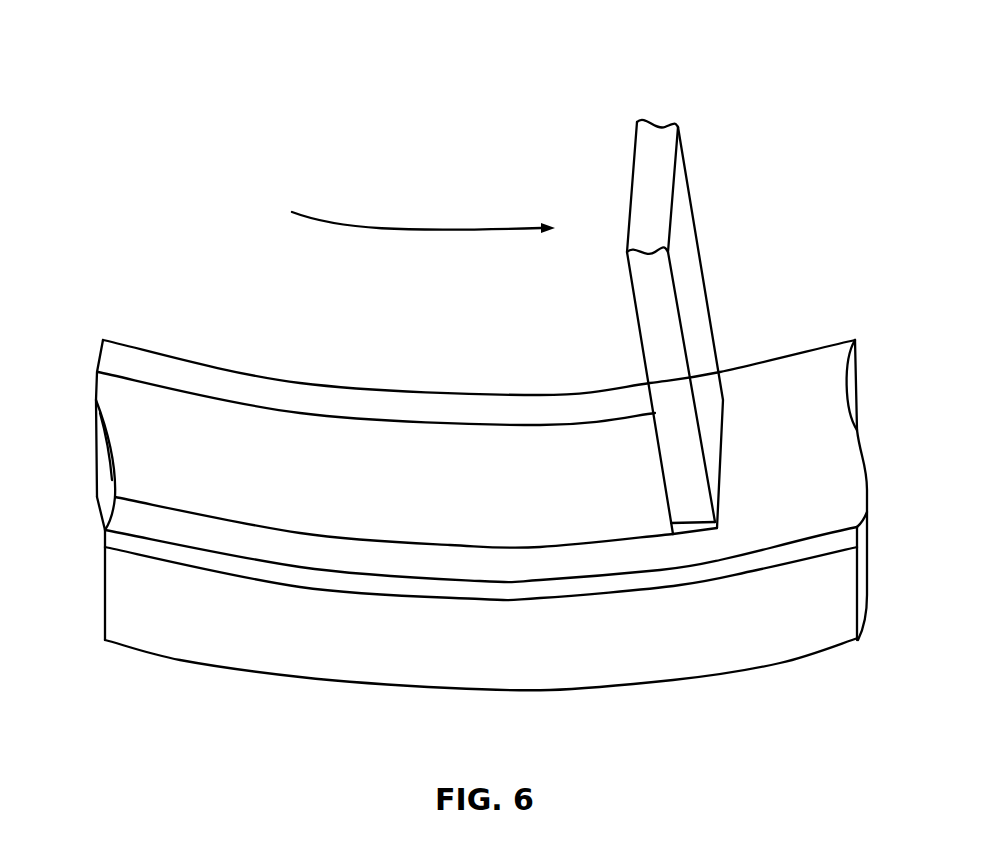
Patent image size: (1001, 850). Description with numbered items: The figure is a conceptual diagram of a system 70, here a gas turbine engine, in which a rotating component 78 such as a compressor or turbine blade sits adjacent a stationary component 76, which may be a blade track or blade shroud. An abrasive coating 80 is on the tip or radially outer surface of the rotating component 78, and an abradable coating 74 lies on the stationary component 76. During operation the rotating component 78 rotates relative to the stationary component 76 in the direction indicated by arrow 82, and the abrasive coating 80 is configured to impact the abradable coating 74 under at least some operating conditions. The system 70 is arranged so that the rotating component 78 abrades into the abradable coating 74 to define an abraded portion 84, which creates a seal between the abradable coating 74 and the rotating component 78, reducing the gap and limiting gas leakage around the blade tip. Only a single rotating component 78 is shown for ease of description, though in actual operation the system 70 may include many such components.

The system 70 is at (174, 51).
The abradable coating 74 is at (808, 367).
The stationary component 76 is at (117, 597).
The rotating component 78 is at (734, 230).
The abrasive coating 80 is at (673, 533).
The arrow 82 is at (380, 227).
The abraded portion 84 is at (124, 426).